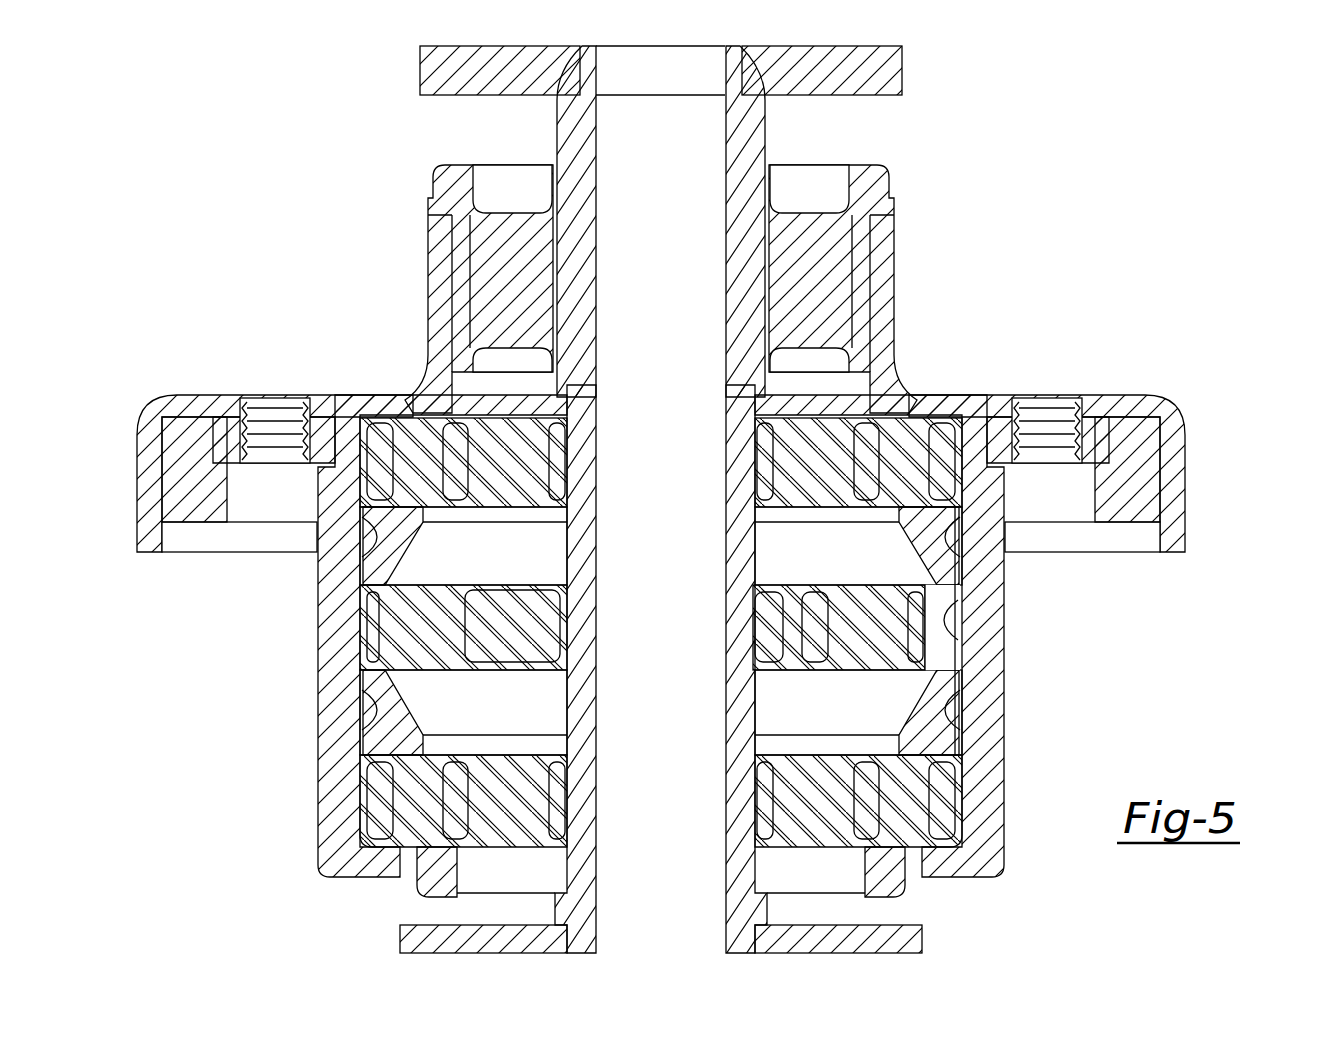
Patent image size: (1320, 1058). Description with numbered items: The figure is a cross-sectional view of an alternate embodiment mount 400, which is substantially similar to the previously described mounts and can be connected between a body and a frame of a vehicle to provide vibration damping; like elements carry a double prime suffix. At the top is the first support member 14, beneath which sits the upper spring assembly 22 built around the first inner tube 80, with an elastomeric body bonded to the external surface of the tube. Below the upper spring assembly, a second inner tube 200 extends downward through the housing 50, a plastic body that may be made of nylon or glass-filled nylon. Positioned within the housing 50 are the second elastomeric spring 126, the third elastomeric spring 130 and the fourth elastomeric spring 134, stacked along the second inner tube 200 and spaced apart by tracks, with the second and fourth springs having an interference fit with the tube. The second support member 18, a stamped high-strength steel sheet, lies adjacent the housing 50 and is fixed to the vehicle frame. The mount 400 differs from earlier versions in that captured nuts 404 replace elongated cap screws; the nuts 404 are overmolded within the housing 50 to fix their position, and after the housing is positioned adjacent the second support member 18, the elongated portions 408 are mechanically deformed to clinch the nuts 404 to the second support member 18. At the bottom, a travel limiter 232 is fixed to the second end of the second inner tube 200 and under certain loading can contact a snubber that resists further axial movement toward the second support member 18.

The mount 400 is at (704, 499).
The first support member 14 is at (905, 75).
The upper spring assembly 22 is at (893, 187).
The first inner tube 80 is at (585, 200).
The captured nuts 404 is at (228, 430).
The elongated portions 408 is at (320, 425).
The second support member 18 is at (1185, 440).
The second inner tube 200 is at (597, 512).
The second elastomeric spring 126 is at (493, 480).
The housing 50 is at (1003, 640).
The third elastomeric spring 130 is at (500, 645).
The fourth elastomeric spring 134 is at (525, 830).
The travel limiter 232 is at (410, 940).